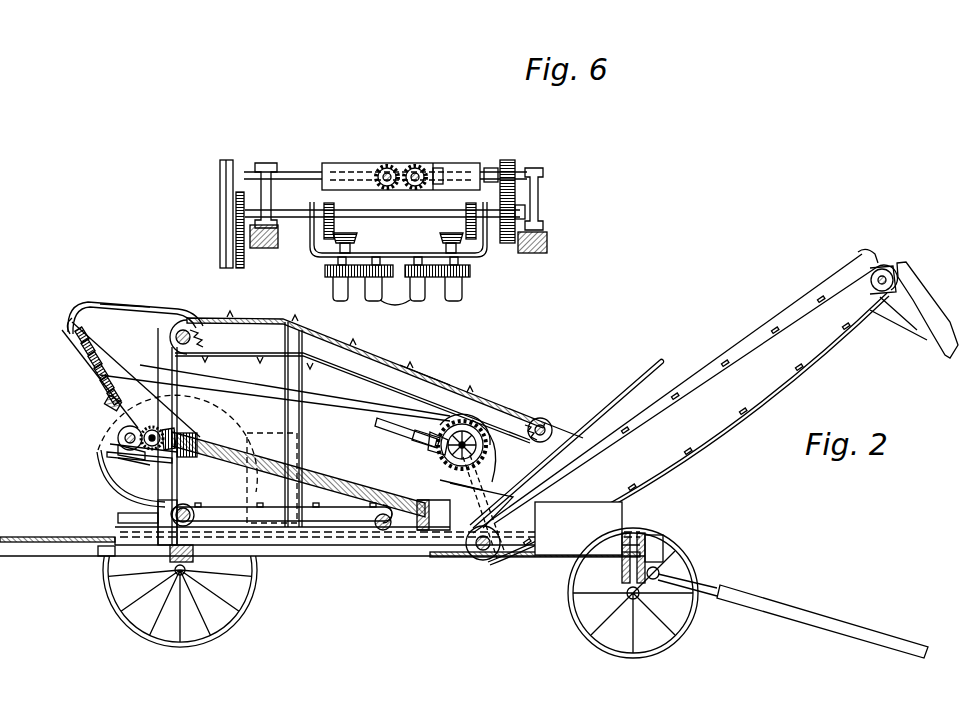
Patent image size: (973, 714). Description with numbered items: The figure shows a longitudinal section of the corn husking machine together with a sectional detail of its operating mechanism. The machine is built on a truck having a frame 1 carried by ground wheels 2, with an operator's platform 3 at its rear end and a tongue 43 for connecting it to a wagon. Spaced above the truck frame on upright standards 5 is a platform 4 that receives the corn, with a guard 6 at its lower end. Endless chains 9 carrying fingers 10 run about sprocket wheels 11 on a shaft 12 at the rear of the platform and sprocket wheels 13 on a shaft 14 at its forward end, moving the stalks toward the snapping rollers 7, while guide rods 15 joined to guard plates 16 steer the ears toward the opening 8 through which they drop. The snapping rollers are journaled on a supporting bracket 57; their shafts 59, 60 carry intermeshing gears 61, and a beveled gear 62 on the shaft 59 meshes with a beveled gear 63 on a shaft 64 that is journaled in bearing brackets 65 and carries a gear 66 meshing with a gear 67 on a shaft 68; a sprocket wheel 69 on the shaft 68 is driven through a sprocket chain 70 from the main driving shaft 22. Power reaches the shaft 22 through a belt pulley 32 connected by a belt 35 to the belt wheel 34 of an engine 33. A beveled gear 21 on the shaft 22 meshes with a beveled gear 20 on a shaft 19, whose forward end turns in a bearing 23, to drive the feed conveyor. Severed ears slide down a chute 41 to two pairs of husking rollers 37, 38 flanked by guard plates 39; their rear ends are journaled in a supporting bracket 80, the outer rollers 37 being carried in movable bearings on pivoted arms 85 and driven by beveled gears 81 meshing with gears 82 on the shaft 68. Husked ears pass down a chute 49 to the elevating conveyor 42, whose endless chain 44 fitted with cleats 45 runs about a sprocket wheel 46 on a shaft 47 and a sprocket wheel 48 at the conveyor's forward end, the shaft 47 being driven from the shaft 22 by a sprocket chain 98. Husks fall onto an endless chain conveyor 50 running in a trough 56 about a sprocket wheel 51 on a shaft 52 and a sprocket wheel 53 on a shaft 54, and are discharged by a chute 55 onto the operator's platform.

In FIG. 2, the frame 1 is at (292, 557).
In FIG. 2, the ground wheels 2 is at (248, 598).
In FIG. 2, the operator's platform 3 is at (40, 537).
In FIG. 2, the platform 4 is at (425, 378).
In FIG. 6, the upright standards 5 is at (276, 243).
In FIG. 2, the upright standards 5 is at (303, 385).
In FIG. 2, the guard 6 is at (628, 388).
In FIG. 2, the snapping rollers 7 is at (78, 352).
In FIG. 2, the opening 8 is at (135, 308).
In FIG. 2, the endless chains 9 is at (250, 353).
In FIG. 2, the fingers 10 is at (240, 320).
In FIG. 2, the sprocket wheels 11 is at (200, 340).
In FIG. 2, the shaft 12 is at (192, 328).
In FIG. 2, the sprocket wheels 13 is at (523, 426).
In FIG. 2, the shaft 14 is at (550, 423).
In FIG. 2, the rods 15 is at (105, 304).
In FIG. 2, the guard plates 16 is at (70, 320).
In FIG. 2, the shaft 19 is at (386, 418).
In FIG. 2, the beveled gear 20 is at (440, 458).
In FIG. 2, the beveled gear 21 is at (462, 430).
In FIG. 2, the shaft 22 is at (480, 418).
In FIG. 2, the bearing 23 is at (432, 448).
In FIG. 2, the belt pulley 32 is at (496, 445).
In FIG. 2, the internal combustion engine 33 is at (252, 433).
In FIG. 2, the belt wheel 34 is at (110, 488).
In FIG. 2, the belt 35 is at (334, 406).
In FIG. 6, the husking roller 37 is at (333, 290).
In FIG. 2, the husking roller 37 is at (305, 471).
In FIG. 6, the husking roller 38 is at (410, 300).
In FIG. 2, the guard plates 39 is at (412, 437).
In FIG. 2, the inclined plate or chute 41 is at (180, 392).
In FIG. 2, the conveyor 42 is at (711, 358).
In FIG. 2, the tongue 43 is at (752, 596).
In FIG. 2, the endless chain 44 is at (524, 540).
In FIG. 2, the cleats 45 is at (580, 458).
In FIG. 2, the sprocket wheel 46 is at (493, 558).
In FIG. 2, the shaft 47 is at (478, 552).
In FIG. 2, the sprocket wheel 48 is at (872, 288).
In FIG. 2, the chute 49 is at (485, 500).
In FIG. 2, the endless chain conveyor 50 is at (330, 522).
In FIG. 2, the sprocket wheel 51 is at (376, 524).
In FIG. 2, the shaft 52 is at (388, 530).
In FIG. 2, the sprocket wheel 53 is at (190, 522).
In FIG. 2, the shaft 54 is at (178, 525).
In FIG. 2, the chute 55 is at (105, 560).
In FIG. 2, the trough like structure 56 is at (150, 506).
In FIG. 2, the supporting frame or bracket 57 is at (98, 388).
In FIG. 6, the shaft 59 is at (420, 166).
In FIG. 2, the shaft 59 is at (106, 404).
In FIG. 6, the shaft 60 is at (387, 165).
In FIG. 6, the intermeshing gears 61 is at (393, 190).
In FIG. 2, the beveled gear 62 is at (118, 438).
In FIG. 6, the beveled gear 63 is at (430, 190).
In FIG. 2, the beveled gear 63 is at (118, 450).
In FIG. 6, the shaft 64 is at (491, 167).
In FIG. 2, the shaft 64 is at (120, 460).
In FIG. 6, the bearing brackets 65 is at (270, 165).
In FIG. 6, the gear 66 is at (514, 165).
In FIG. 6, the gear 67 is at (527, 206).
In FIG. 6, the shaft 68 is at (400, 218).
In FIG. 2, the shaft 68 is at (140, 453).
In FIG. 6, the sprocket wheel 69 is at (238, 188).
In FIG. 6, the sprocket chain 70 is at (242, 260).
In FIG. 6, the supporting bracket 80 is at (487, 257).
In FIG. 6, the beveled gears 81 is at (350, 232).
In FIG. 2, the beveled gears 81 is at (172, 432).
In FIG. 6, the gears 82 is at (334, 215).
In FIG. 2, the gears 82 is at (150, 427).
In FIG. 2, the arms 85 is at (222, 510).
In FIG. 2, the sprocket chain 98 is at (460, 482).